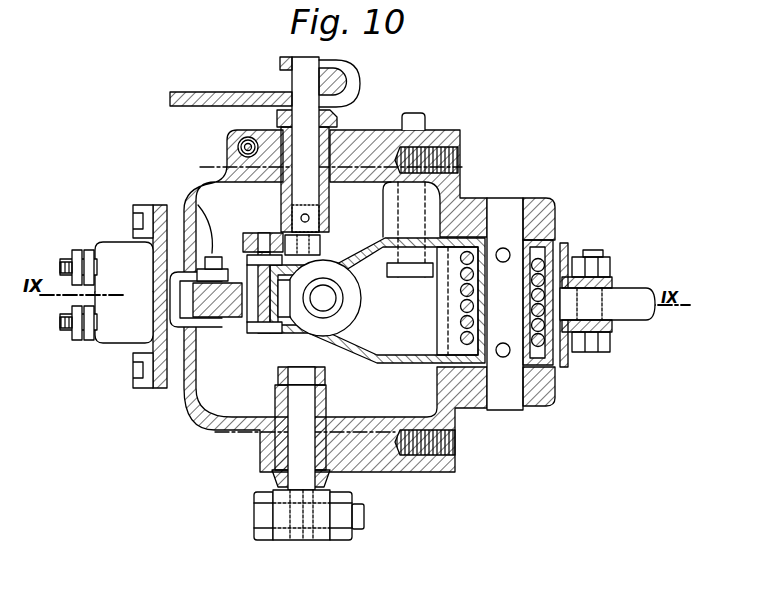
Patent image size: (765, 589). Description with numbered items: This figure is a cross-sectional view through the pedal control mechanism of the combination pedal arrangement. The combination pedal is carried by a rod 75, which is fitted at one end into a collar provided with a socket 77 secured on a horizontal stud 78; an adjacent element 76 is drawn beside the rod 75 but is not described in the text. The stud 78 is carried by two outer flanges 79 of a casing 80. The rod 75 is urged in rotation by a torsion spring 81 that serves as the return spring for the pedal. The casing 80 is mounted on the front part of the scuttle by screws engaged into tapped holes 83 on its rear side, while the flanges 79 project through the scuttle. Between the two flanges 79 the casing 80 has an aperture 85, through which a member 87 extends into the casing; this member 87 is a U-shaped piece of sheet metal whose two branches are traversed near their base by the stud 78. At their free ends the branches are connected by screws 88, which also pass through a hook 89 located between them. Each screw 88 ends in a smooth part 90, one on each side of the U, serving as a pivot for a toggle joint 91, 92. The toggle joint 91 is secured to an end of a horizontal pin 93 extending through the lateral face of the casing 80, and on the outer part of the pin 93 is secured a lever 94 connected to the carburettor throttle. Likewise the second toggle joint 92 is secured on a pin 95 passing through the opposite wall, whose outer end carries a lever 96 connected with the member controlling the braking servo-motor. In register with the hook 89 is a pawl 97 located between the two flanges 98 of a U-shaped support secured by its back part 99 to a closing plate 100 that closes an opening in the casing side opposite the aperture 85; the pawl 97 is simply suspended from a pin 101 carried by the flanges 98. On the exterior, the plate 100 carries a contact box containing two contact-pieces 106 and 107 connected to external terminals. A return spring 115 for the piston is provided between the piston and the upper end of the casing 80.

The rod 75 is at (639, 318).
The washer 76 is at (607, 292).
The socket 77 is at (570, 353).
The horizontal stud 78 is at (500, 212).
The outer flanges 79 is at (541, 218).
The casing 80 is at (383, 163).
The torsion spring 81 is at (612, 284).
The tapped holes 83 is at (458, 161).
The aperture 85 is at (440, 335).
The U-shaped member 87 is at (385, 369).
The screws 88 is at (282, 333).
The hook 89 is at (265, 335).
The smooth part 90 is at (262, 248).
The toggle joint 91 is at (270, 233).
The second toggle joint 92 is at (327, 376).
The horizontal pin 93 is at (305, 138).
The lever 94 is at (352, 82).
The pin 95 is at (285, 456).
The lever 96 is at (318, 528).
The pawl 97 is at (212, 328).
The flanges 98 is at (136, 222).
The back part 99 is at (163, 305).
The closing plate 100 is at (152, 263).
The pin 101 is at (200, 260).
The contact-piece 106 is at (62, 262).
The contact-piece 107 is at (62, 330).
The return spring 115 is at (123, 350).